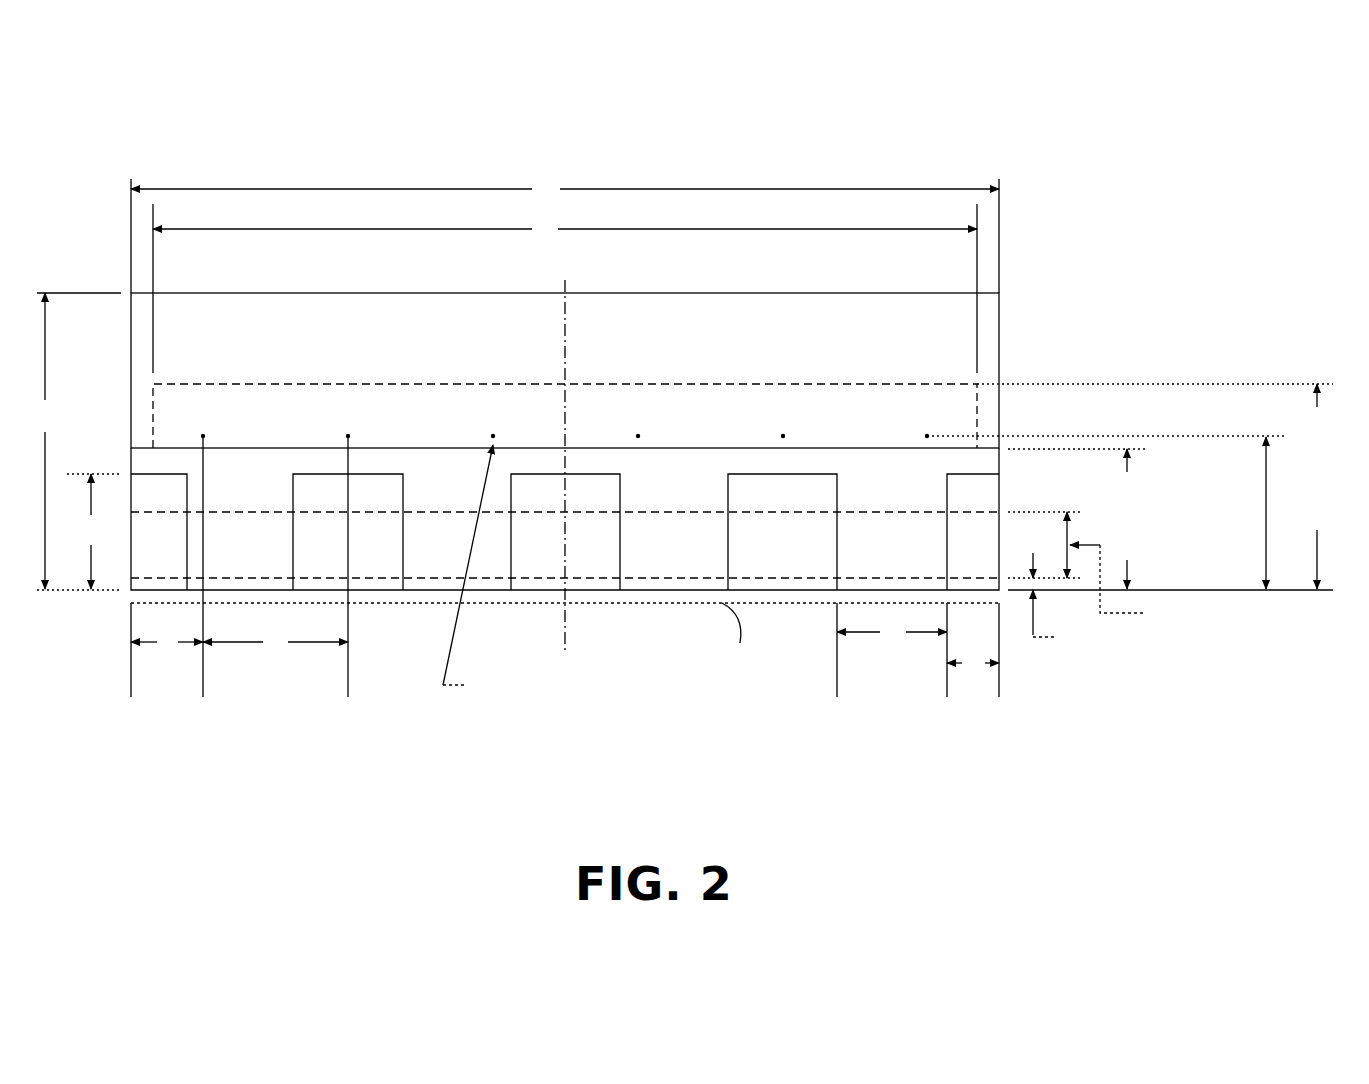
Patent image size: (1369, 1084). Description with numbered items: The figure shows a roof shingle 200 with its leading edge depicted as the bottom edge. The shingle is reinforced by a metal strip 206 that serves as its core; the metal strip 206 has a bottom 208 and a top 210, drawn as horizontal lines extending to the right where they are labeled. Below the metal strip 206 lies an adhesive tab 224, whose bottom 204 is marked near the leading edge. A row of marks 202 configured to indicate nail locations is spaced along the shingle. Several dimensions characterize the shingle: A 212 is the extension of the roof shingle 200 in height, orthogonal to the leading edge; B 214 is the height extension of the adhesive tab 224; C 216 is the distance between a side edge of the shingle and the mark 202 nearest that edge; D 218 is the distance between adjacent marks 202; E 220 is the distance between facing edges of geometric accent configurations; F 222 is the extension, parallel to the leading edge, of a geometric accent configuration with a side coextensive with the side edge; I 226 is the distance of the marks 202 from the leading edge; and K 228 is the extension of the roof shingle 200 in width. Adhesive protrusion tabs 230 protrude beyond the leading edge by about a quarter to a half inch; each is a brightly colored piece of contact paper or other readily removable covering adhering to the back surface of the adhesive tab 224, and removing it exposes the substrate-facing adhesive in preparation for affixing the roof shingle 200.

The roof shingle 200 is at (162, 125).
The marks 202 is at (545, 735).
The bottom of adhesive tab 204 is at (1110, 715).
The metal strip 206 is at (603, 247).
The bottom of metal strip 208 is at (1180, 505).
The top of metal strip 210 is at (1330, 555).
The dimension A 212 is at (57, 414).
The dimension B 214 is at (103, 528).
The dimension C 216 is at (170, 663).
The dimension D 218 is at (277, 660).
The dimension E 220 is at (895, 655).
The dimension F 222 is at (975, 690).
The adhesive tab 224 is at (1292, 647).
The dimension I 226 is at (1238, 467).
The dimension K 228 is at (562, 185).
The adhesive protrusion tab 230 is at (745, 735).